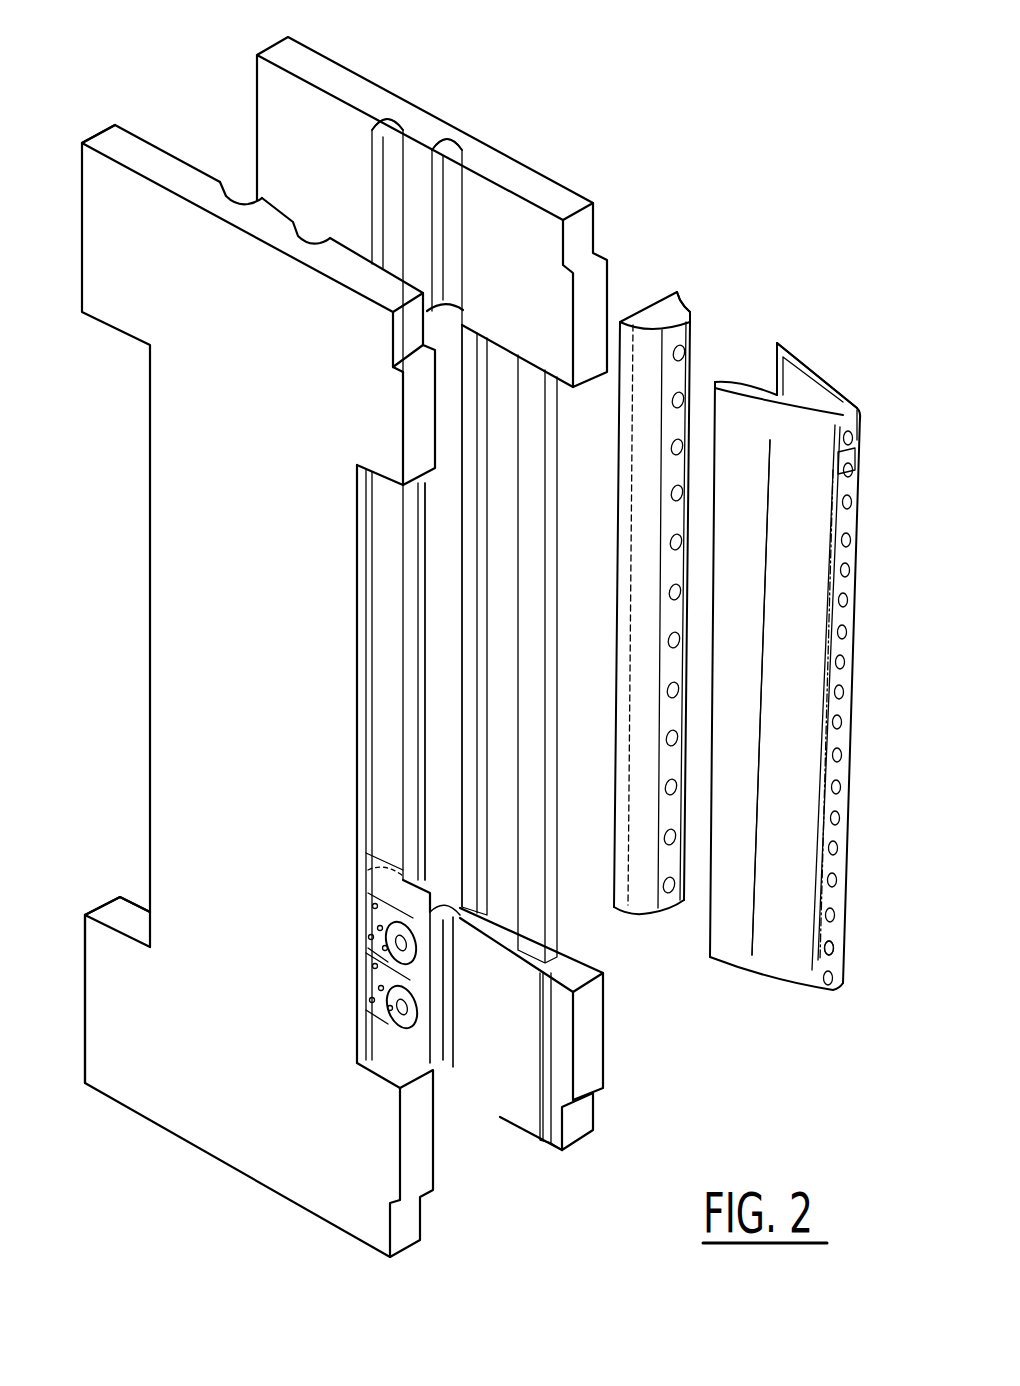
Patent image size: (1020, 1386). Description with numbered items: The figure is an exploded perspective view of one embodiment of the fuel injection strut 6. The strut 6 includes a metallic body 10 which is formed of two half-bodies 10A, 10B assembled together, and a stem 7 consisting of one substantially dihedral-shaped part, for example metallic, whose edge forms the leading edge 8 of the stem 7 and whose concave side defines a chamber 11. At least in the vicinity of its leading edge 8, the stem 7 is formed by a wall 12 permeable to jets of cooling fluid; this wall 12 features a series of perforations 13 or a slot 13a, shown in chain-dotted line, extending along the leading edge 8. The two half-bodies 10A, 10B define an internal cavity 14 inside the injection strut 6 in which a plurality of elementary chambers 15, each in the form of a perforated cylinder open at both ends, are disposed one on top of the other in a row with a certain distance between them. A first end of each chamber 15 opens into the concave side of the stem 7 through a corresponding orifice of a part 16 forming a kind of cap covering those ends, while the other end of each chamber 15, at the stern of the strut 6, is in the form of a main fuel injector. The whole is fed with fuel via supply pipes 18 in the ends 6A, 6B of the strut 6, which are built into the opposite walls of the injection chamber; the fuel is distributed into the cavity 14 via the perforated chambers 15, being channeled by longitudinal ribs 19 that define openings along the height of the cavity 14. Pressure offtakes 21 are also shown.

The fuel injection strut 6 is at (636, 240).
The end of the strut 6A is at (257, 67).
The end of the strut 6B is at (117, 905).
The stem 7 is at (804, 660).
The leading edge 8 is at (868, 468).
The metallic body 10 is at (337, 638).
The half-body 10A is at (190, 421).
The half-body 10B is at (498, 142).
The chamber 11 is at (752, 381).
The wall 12 is at (773, 937).
The perforations 13 is at (855, 620).
The slot 13a is at (832, 930).
The internal cavity 14 is at (436, 766).
The elementary chambers 15 is at (372, 921).
The cap part 16 is at (688, 305).
The supply pipes 18 is at (388, 147).
The longitudinal ribs 19 is at (463, 653).
The pressure offtakes 21 is at (543, 1117).